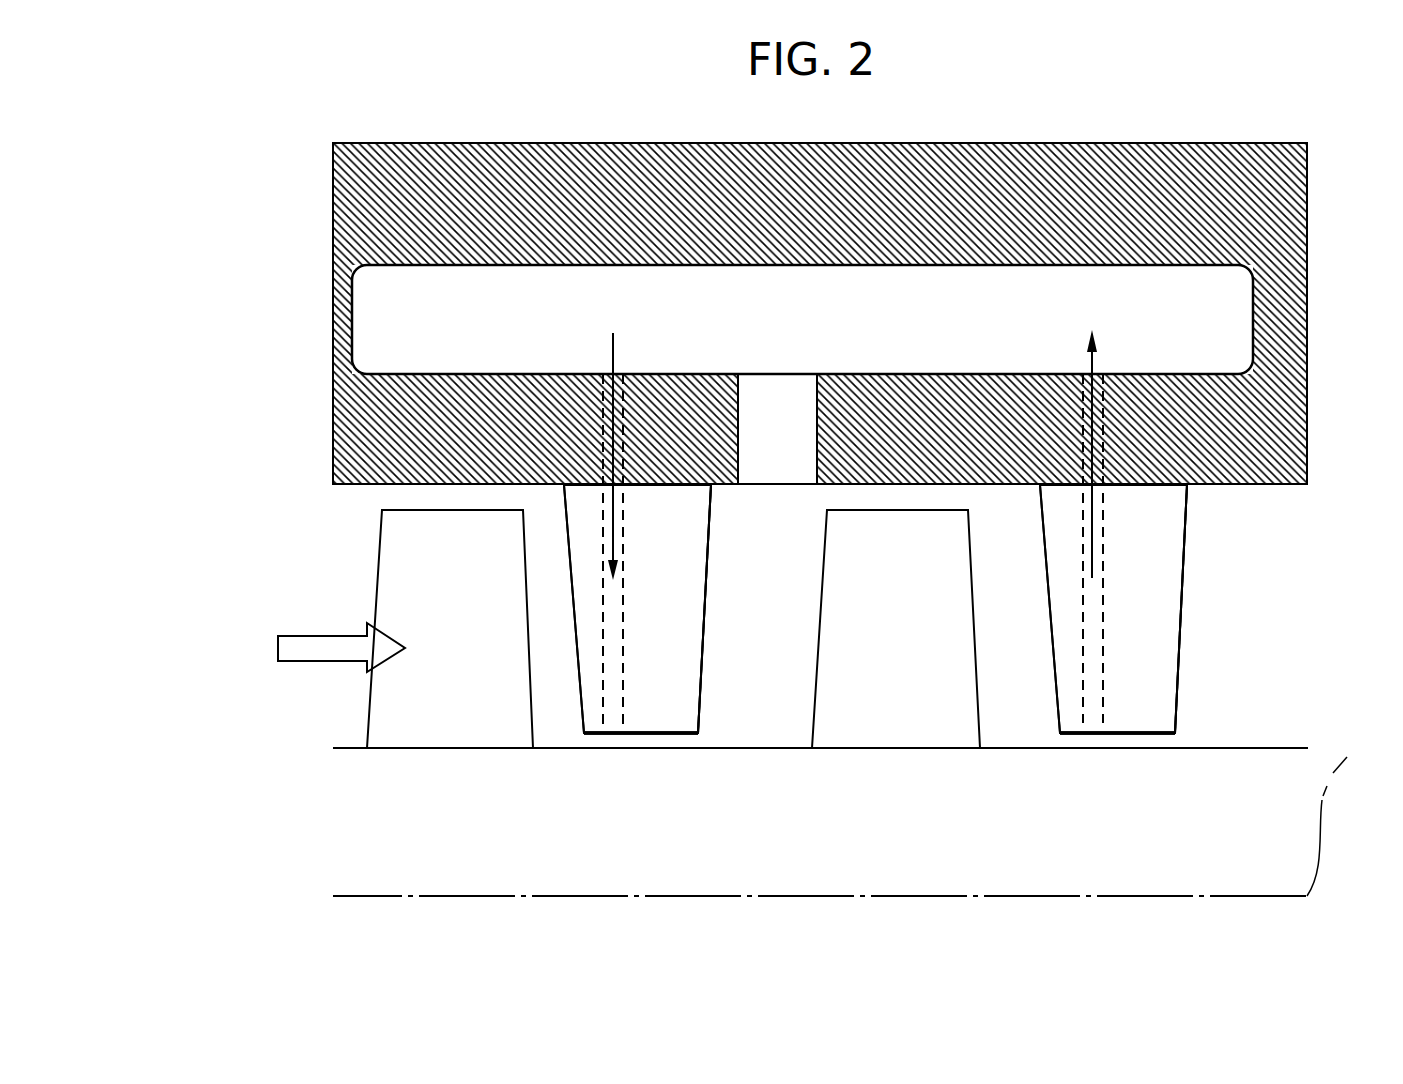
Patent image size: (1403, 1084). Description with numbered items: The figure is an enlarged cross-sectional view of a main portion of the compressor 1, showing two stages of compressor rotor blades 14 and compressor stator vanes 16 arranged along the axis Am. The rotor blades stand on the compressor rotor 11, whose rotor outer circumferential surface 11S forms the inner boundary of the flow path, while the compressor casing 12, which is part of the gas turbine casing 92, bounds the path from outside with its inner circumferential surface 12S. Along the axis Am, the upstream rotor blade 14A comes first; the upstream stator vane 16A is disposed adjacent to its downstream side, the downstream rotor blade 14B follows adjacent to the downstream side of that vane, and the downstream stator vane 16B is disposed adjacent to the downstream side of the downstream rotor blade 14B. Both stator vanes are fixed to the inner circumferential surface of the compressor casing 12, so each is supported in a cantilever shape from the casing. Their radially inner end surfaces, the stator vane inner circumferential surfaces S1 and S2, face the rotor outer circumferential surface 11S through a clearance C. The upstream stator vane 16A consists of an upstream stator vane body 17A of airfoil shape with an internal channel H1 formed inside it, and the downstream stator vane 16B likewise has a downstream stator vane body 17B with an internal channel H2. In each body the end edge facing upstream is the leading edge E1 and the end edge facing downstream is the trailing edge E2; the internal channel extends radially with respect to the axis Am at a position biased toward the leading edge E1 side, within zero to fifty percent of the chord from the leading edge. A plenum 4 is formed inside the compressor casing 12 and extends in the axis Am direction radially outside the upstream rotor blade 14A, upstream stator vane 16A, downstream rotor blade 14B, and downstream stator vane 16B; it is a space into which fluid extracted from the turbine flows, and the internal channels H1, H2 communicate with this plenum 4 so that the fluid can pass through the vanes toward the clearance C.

The compressor 1 is at (252, 153).
The compressor casing 12 is at (333, 233).
The gas turbine casing 92 is at (747, 302).
The inner circumferential surface 12S is at (679, 493).
The plenum 4 is at (947, 270).
The compressor rotor blade 14 is at (558, 680).
The upstream rotor blade 14A is at (387, 705).
The downstream rotor blade 14B is at (880, 710).
The compressor stator vane 16 is at (899, 600).
The upstream stator vane 16A is at (668, 745).
The downstream stator vane 16B is at (1183, 692).
The upstream stator vane body 17A is at (687, 710).
The downstream stator vane body 17B is at (1168, 558).
The leading edge E1 is at (578, 672).
The trailing edge E2 is at (708, 577).
The internal channel H1 is at (608, 698).
The internal channel H2 is at (1083, 707).
The stator vane inner circumferential surface S1 is at (630, 733).
The stator vane inner circumferential surface S2 is at (1155, 735).
The clearance C is at (642, 740).
The compressor rotor 11 is at (1252, 855).
The rotor outer circumferential surface 11S is at (1217, 745).
The axis Am is at (1342, 812).